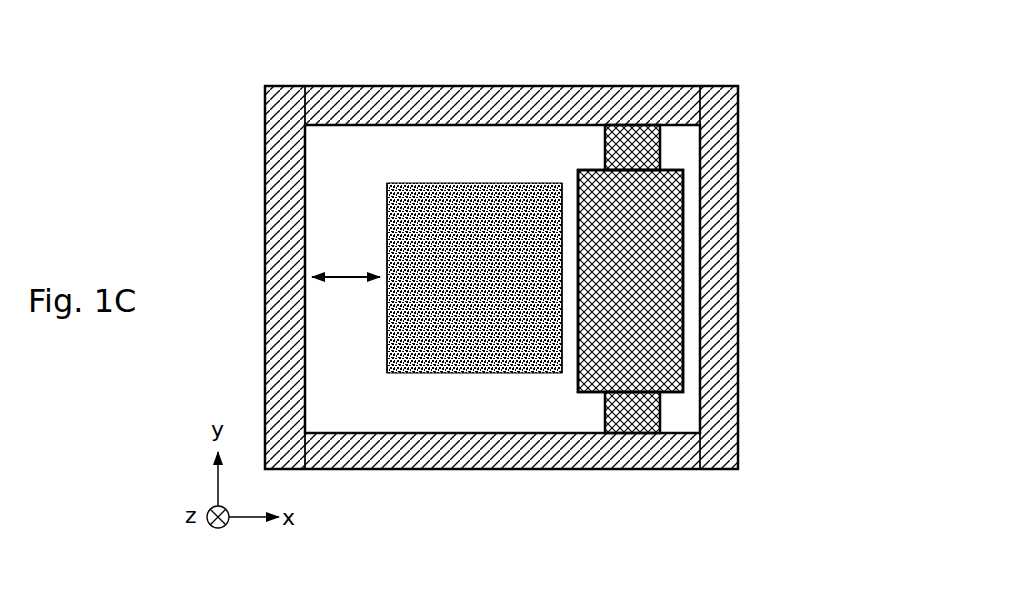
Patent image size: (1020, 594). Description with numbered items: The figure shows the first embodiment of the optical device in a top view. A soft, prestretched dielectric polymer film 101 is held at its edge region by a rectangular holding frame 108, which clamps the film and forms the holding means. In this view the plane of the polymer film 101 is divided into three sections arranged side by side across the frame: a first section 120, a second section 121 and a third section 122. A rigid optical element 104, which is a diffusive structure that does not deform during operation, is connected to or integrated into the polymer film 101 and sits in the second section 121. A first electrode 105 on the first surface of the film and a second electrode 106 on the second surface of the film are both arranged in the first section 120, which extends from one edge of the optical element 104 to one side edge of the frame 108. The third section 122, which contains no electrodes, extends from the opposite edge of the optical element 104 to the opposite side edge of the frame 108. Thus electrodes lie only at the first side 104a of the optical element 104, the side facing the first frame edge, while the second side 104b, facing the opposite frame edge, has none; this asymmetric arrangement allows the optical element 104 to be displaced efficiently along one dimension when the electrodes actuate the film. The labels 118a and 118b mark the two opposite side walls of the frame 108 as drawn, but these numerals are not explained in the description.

The polymer film 101 is at (355, 400).
The rigid optical element 104 is at (504, 261).
The first side of optical element 104a is at (562, 313).
The second side of optical element 104b is at (387, 320).
The first electrode 105 is at (628, 130).
The second electrode 106 is at (628, 411).
The second holding frame 108 is at (512, 307).
The first side wall 118a is at (722, 197).
The second side wall 118b is at (280, 218).
The first section 120 is at (590, 148).
The second section 121 is at (472, 150).
The third section 122 is at (346, 150).